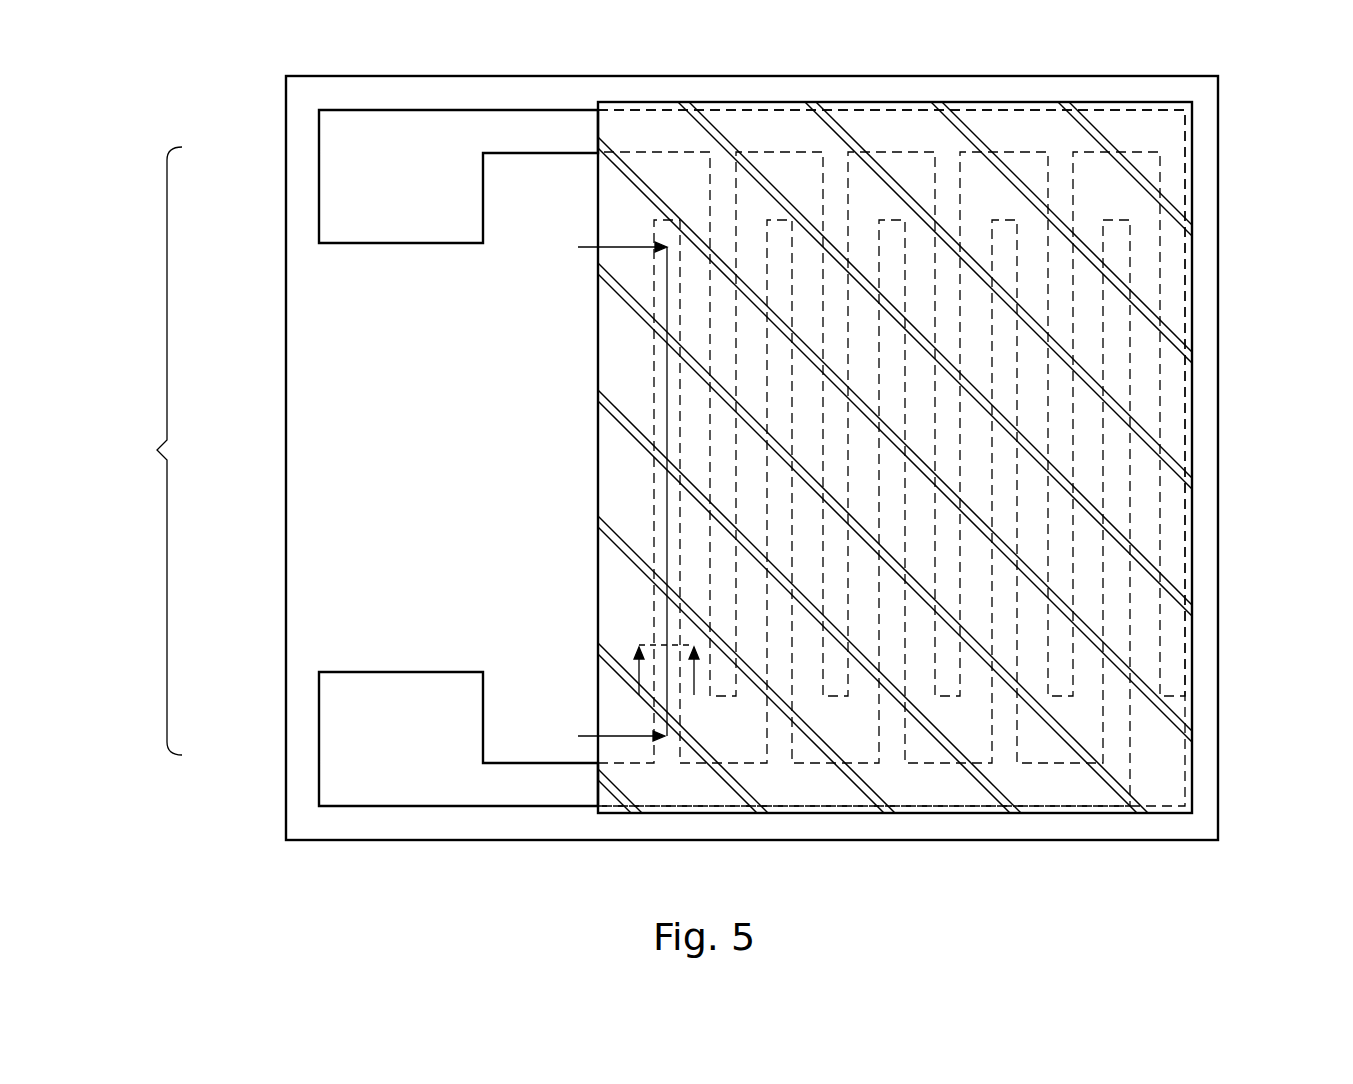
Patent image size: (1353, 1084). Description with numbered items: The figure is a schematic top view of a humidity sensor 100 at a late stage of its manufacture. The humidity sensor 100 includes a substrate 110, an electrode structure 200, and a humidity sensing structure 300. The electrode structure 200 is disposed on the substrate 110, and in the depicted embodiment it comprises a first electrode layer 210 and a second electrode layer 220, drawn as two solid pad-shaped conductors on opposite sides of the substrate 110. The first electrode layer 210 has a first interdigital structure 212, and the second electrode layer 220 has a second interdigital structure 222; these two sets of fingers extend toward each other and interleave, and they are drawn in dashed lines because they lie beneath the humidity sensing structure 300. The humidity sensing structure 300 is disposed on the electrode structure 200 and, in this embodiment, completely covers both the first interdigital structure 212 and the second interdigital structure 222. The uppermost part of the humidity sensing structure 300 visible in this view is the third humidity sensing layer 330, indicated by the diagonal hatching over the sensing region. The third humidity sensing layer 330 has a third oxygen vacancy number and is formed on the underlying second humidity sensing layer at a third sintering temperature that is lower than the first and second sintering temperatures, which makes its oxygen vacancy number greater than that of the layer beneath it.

The humidity sensor 100 is at (99, 69).
The substrate 110 is at (1203, 797).
The electrode structure 200 is at (350, 458).
The first electrode layer 210 is at (335, 738).
The first interdigital structure 212 is at (1115, 355).
The second electrode layer 220 is at (335, 176).
The second interdigital structure 222 is at (1172, 256).
The humidity sensing structure 300 is at (1204, 129).
The third humidity sensing layer 330 is at (1118, 190).